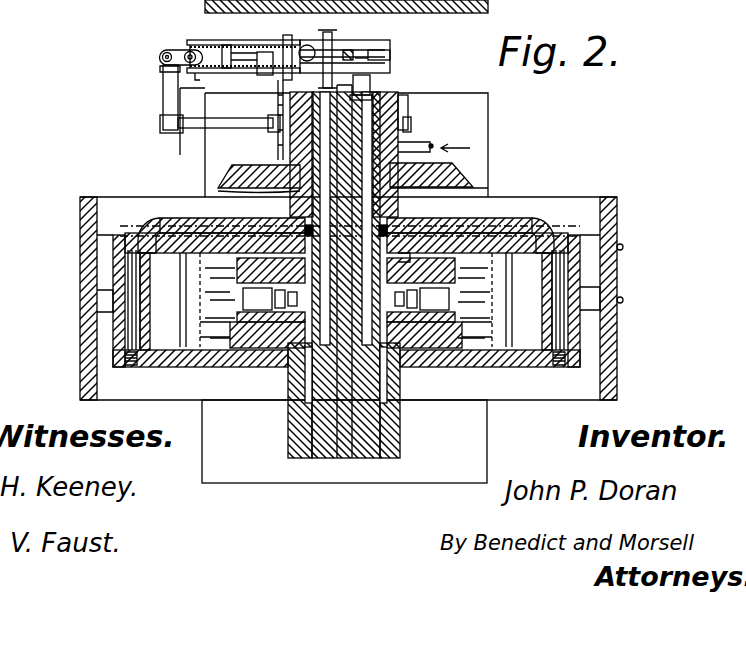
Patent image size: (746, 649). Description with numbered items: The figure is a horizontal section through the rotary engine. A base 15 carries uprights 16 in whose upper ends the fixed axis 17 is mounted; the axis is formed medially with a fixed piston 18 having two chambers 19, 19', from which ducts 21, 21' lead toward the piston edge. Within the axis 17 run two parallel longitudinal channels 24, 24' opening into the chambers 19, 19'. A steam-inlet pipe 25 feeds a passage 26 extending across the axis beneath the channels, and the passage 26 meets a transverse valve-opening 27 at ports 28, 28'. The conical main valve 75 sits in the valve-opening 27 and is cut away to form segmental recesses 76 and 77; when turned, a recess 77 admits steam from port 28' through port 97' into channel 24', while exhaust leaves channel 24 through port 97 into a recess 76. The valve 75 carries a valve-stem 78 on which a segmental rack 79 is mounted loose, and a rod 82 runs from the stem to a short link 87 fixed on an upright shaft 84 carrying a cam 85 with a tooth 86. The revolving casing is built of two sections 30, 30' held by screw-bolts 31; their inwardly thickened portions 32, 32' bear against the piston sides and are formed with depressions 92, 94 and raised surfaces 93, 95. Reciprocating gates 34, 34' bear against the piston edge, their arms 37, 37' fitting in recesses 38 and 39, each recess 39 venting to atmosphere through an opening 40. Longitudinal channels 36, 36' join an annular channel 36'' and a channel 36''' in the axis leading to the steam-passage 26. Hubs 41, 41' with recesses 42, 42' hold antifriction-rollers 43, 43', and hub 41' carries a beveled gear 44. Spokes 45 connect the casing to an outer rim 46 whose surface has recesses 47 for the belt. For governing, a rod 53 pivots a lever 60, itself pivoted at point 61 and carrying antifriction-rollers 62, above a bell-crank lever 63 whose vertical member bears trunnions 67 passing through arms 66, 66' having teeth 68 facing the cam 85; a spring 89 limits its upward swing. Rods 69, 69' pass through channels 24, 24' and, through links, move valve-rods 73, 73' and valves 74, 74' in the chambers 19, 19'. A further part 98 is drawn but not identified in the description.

The base 15 is at (347, 400).
The standards or uprights 16 is at (298, 460).
The fixed shaft or axis 17 is at (330, 460).
The fixed piston 18 is at (240, 272).
The chamber 19 is at (136, 370).
The chamber 19' is at (565, 370).
The duct 21 is at (226, 437).
The duct 21' is at (479, 409).
The longitudinal channel 24 is at (162, 172).
The longitudinal channel 24' is at (526, 158).
The steam-inlet pipe 25 is at (420, 134).
The passage 26 is at (292, 142).
The transverse valve-opening 27 is at (400, 118).
The port 28 is at (205, 150).
The port 28' is at (494, 81).
The casing section 30 is at (148, 215).
The casing section 30' is at (173, 388).
The screw-bolts 31 is at (590, 245).
The inwardly-extended thickened portion 32 is at (439, 237).
The inwardly-extended thickened portion 32' is at (209, 428).
The reciprocating gate 34 is at (217, 377).
The reciprocating gate 34' is at (507, 375).
The longitudinal channel 36 is at (221, 226).
The longitudinal channel 36' is at (470, 226).
The annular channel 36'' is at (276, 210).
The longitudinal channel 36''' is at (341, 169).
The inwardly-extending arm 37 is at (509, 197).
The inwardly-extending arm 37' is at (489, 396).
The recess 38 is at (235, 248).
The recess 39 is at (428, 380).
The opening 40 is at (405, 370).
The hub portion 41 is at (232, 447).
The hub portion 41' is at (413, 230).
The recess 42 is at (260, 465).
The recess 42' is at (235, 184).
The antifriction-roller 43 is at (384, 428).
The antifriction-roller 43' is at (466, 145).
The beveled gear 44 is at (420, 147).
The spokes 45 is at (600, 305).
The outer rim 46 is at (97, 300).
The recesses 47 is at (623, 248).
The rod 53 is at (355, 55).
The lever 60 is at (362, 92).
The pivot point 61 is at (362, 75).
The antifriction-rollers 62 is at (327, 36).
The bell-crank lever 63 is at (232, 52).
The arm 66 is at (343, 45).
The arm 66' is at (297, 85).
The trunnions 67 is at (229, 45).
The teeth 68 is at (193, 40).
The rod 69 is at (147, 300).
The rod 69' is at (543, 300).
The valve-rod 73 is at (219, 445).
The valve-rod 73' is at (360, 430).
The valve 74 is at (254, 387).
The valve 74' is at (439, 407).
The main valve 75 is at (412, 122).
The segmental recess 76 is at (286, 37).
The segmental recess 77 is at (420, 150).
The valve-stem 78 is at (242, 118).
The segmental rack 79 is at (277, 96).
The rod 82 is at (163, 90).
The short upright shaft 84 is at (186, 50).
The cam 85 is at (162, 68).
The tooth 86 is at (205, 40).
The short link 87 is at (163, 55).
The spring 89 is at (258, 75).
The depressions 92 is at (435, 275).
The raised surfaces 93 is at (245, 272).
The depressions 94 is at (232, 322).
The raised surfaces 95 is at (455, 325).
The port 97 is at (157, 129).
The port 97' is at (394, 85).
The port 98 is at (445, 262).